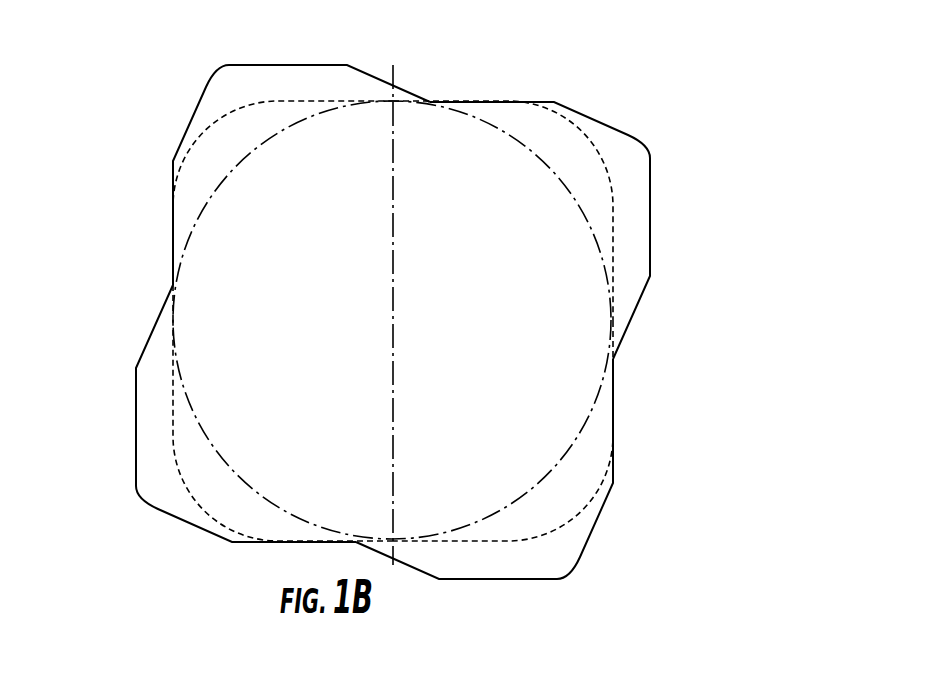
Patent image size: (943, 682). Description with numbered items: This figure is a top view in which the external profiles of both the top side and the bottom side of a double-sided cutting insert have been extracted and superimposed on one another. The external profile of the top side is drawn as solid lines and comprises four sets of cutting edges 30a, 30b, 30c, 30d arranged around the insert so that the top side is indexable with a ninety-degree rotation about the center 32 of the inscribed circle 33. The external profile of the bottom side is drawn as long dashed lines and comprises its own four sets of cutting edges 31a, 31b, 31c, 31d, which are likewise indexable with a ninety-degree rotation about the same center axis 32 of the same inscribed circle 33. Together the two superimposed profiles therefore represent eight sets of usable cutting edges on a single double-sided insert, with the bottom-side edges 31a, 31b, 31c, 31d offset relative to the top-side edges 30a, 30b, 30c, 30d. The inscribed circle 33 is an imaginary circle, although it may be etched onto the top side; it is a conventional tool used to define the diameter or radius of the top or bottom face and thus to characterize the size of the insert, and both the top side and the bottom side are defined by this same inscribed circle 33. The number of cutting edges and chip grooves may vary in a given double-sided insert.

The set of cutting edges 30a is at (602, 123).
The set of cutting edges 30b is at (273, 62).
The set of cutting edges 30c is at (188, 522).
The set of cutting edges 30d is at (513, 580).
The set of cutting edges 31a is at (610, 205).
The set of cutting edges 31b is at (190, 160).
The set of cutting edges 31c is at (173, 437).
The set of cutting edges 31d is at (597, 473).
The center axis 32 is at (385, 318).
The inscribed circle 33 is at (598, 405).